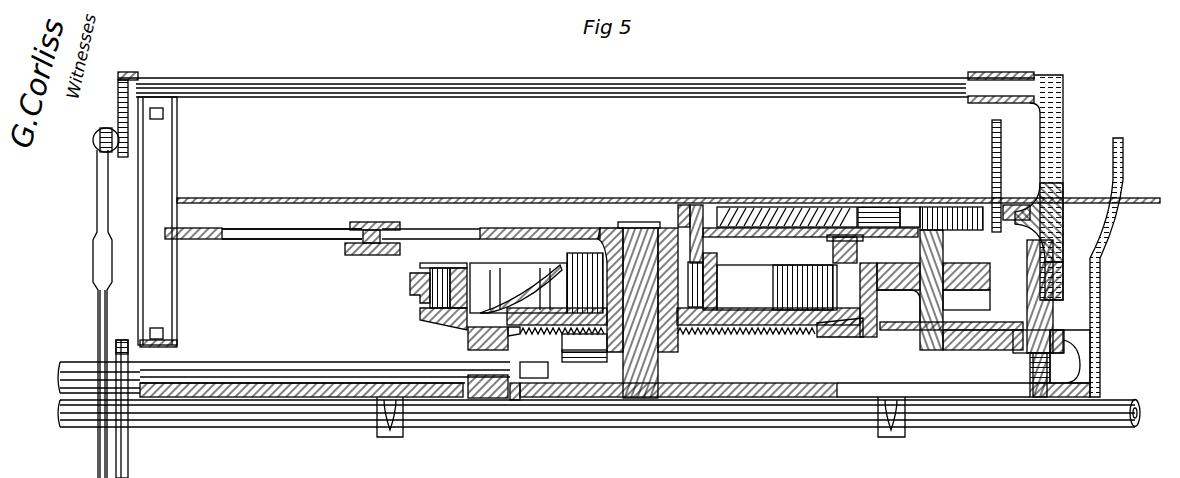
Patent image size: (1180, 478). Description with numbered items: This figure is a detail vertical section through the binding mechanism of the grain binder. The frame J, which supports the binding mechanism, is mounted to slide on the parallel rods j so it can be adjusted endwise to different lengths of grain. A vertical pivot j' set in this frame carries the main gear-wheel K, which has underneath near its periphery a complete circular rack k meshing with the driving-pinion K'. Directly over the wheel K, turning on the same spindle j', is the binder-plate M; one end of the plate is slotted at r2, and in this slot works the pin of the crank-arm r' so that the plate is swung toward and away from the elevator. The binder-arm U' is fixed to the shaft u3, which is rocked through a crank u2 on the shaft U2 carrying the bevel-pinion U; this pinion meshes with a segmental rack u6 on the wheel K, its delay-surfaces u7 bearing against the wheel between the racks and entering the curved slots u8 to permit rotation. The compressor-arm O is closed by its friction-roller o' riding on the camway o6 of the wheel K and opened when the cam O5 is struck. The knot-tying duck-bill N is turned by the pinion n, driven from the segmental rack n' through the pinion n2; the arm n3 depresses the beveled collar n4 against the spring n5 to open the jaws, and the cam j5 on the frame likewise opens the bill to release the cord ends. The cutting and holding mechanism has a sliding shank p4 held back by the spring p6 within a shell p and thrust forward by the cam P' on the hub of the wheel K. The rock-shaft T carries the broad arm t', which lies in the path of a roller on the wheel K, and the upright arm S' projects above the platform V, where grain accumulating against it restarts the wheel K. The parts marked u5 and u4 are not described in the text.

The shaft u3 is at (445, 78).
The binder-arm U' is at (1057, 187).
The frame J is at (323, 436).
The rock-shaft T is at (99, 279).
The crank u2 is at (128, 452).
The shaft U2 is at (585, 357).
The parallel rods j is at (599, 424).
The platform V is at (668, 191).
The binder-plate M is at (567, 279).
The slot r2 is at (293, 232).
The crank-arm r' is at (366, 249).
The main gear-wheel K is at (425, 285).
The circular rack k is at (425, 318).
The cam O5 is at (518, 287).
The curved slots u8 is at (518, 312).
The vertical pivot j' is at (648, 280).
The driving-pinion K' is at (667, 344).
The broad arm t' is at (584, 348).
The segmental rack u6 is at (512, 330).
The bevel-pinion U is at (507, 410).
The delay-surfaces u7 is at (516, 398).
The cam P' is at (768, 265).
The camway o6 is at (822, 282).
The friction-roller o' is at (850, 249).
The spring p6 is at (790, 207).
The sliding shank p4 is at (880, 207).
The shell p is at (941, 218).
The segmental rack n' is at (890, 300).
The pinion n is at (998, 313).
The pinion n2 is at (973, 280).
The arm n3 is at (951, 344).
The spring n5 is at (1028, 360).
The beveled collar n4 is at (1066, 348).
The cam j5 is at (1076, 362).
The compressor-arm O is at (1004, 176).
The duck-bill N is at (1020, 205).
The arm u5 is at (1032, 200).
The arm u4 is at (1062, 240).
The upright arm S' is at (1114, 267).